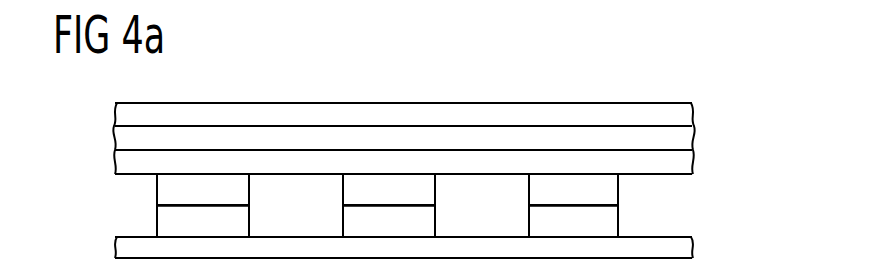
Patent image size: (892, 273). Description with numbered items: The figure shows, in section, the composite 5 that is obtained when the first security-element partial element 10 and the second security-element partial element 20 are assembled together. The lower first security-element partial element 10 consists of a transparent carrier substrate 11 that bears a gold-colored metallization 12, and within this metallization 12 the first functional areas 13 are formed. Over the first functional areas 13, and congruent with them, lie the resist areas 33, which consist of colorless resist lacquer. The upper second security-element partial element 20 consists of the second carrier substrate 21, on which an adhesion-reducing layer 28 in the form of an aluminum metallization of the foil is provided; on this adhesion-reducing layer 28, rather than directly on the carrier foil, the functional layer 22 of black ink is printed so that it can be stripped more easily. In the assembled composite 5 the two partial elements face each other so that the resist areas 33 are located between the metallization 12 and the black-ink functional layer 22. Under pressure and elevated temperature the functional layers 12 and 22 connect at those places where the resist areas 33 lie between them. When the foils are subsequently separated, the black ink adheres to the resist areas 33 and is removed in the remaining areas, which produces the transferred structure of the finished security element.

The composite 5 is at (77, 100).
The second security-element partial element 20 is at (776, 103).
The second carrier substrate 21 is at (695, 119).
The adhesion-reducing layer 28 is at (695, 147).
The functional layer 22 is at (695, 168).
The metallization 12 is at (631, 205).
The resist areas 33 is at (168, 200).
The first functional areas 13 is at (168, 229).
The first security-element partial element 10 is at (752, 207).
The carrier substrate 11 is at (694, 249).